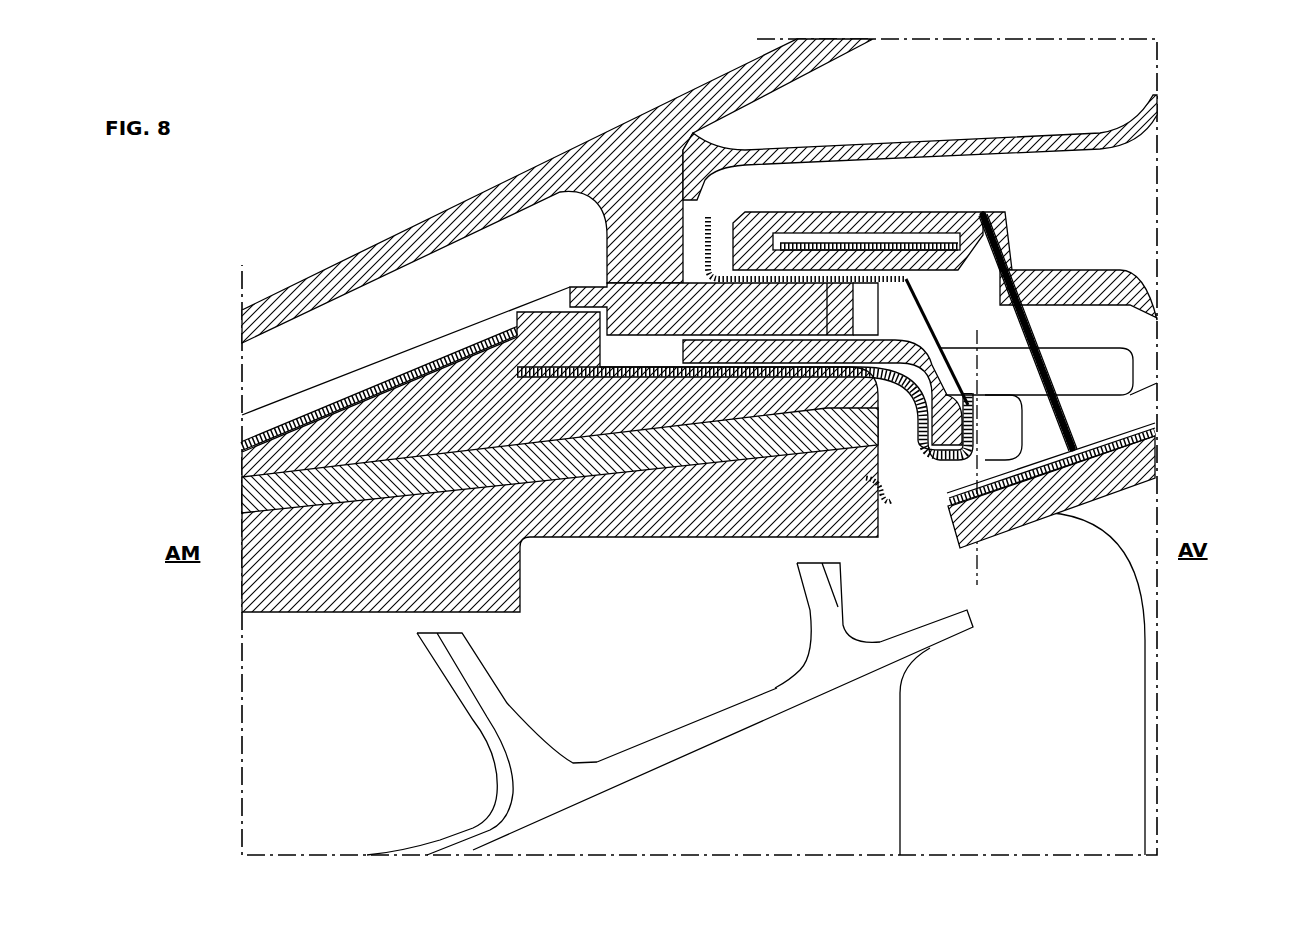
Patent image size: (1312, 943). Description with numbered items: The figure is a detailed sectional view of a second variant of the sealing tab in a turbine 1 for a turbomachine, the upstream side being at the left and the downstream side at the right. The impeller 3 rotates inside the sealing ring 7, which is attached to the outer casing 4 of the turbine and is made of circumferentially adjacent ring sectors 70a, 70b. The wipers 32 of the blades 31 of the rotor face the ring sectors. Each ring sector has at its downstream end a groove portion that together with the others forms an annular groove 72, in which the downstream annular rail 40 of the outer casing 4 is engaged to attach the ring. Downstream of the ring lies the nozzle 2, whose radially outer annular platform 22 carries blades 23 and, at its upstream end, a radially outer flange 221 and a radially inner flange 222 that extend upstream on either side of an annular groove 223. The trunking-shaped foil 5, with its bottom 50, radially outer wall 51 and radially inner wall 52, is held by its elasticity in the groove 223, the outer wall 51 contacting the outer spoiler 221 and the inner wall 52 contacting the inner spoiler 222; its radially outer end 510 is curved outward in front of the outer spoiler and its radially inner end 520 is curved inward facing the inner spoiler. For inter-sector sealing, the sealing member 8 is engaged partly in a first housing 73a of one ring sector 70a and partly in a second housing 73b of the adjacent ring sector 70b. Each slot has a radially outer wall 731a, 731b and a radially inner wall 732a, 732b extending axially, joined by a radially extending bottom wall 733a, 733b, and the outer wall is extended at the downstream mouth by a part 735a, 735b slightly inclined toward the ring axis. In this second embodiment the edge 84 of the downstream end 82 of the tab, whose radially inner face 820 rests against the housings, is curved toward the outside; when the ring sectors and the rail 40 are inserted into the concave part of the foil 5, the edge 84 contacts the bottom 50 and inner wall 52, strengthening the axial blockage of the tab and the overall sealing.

The turbine 1 is at (292, 205).
The nozzle 2 is at (1122, 690).
The impeller 3 is at (670, 709).
The outer casing 4 is at (532, 178).
The foil 5 is at (940, 332).
The sealing ring 7 is at (353, 347).
The sealing member 8 is at (560, 471).
The radially outer annular platform 22 is at (1030, 322).
The blades 23 is at (1093, 483).
The blades 31 is at (783, 750).
The wipers 32 is at (817, 597).
The downstream annular rail 40 is at (740, 322).
The bottom 50 is at (950, 395).
The radially outer wall 51 is at (822, 246).
The radially inner wall 52 is at (1139, 388).
The annular groove 72 is at (940, 306).
The downstream end 82 is at (933, 440).
The edge 84 is at (1155, 430).
The radially outer flange 221 is at (858, 220).
The radially inner flange 222 is at (962, 515).
The annular groove 223 is at (877, 309).
The radially outer end 510 is at (700, 237).
The radially inner end 520 is at (866, 480).
The radially inner face 820 is at (900, 437).
The ring sector 70a is at (560, 534).
The ring sector 70b is at (368, 473).
The first housing 73a is at (745, 298).
The second housing 73b is at (745, 298).
The radially outer wall 731a is at (745, 298).
The radially outer wall 731b is at (745, 298).
The radially inner wall 732a is at (745, 298).
The radially inner wall 732b is at (683, 228).
The bottom wall 733a is at (379, 308).
The bottom wall 733b is at (512, 371).
The inclined part 735a is at (1139, 388).
The inclined part 735b is at (967, 392).